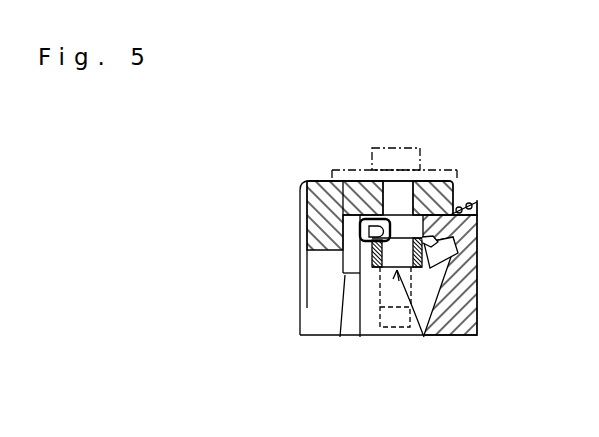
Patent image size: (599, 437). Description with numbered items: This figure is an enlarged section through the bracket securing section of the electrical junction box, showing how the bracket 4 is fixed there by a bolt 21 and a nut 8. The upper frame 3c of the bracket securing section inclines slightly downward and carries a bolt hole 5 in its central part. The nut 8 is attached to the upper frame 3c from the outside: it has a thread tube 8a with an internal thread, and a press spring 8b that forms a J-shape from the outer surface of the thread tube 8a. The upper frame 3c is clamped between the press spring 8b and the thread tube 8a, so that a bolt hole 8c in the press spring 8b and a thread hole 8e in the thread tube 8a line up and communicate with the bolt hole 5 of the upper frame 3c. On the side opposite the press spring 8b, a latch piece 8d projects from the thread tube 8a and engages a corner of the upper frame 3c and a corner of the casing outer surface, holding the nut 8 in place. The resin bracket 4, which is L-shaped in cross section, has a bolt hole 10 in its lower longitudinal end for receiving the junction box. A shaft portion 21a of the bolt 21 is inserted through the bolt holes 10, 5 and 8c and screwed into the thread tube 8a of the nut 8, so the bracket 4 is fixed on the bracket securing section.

The upper frame 3c is at (460, 203).
The bracket 4 is at (320, 204).
The bolt hole 5 is at (347, 233).
The nut 8 is at (368, 258).
The thread tube 8a is at (424, 266).
The press spring 8b is at (317, 180).
The bolt hole 8c is at (442, 190).
The latch piece 8d is at (422, 235).
The thread hole 8e is at (425, 336).
The bolt hole 10 is at (362, 192).
The bolt 21 is at (397, 147).
The shaft portion 21a is at (403, 192).